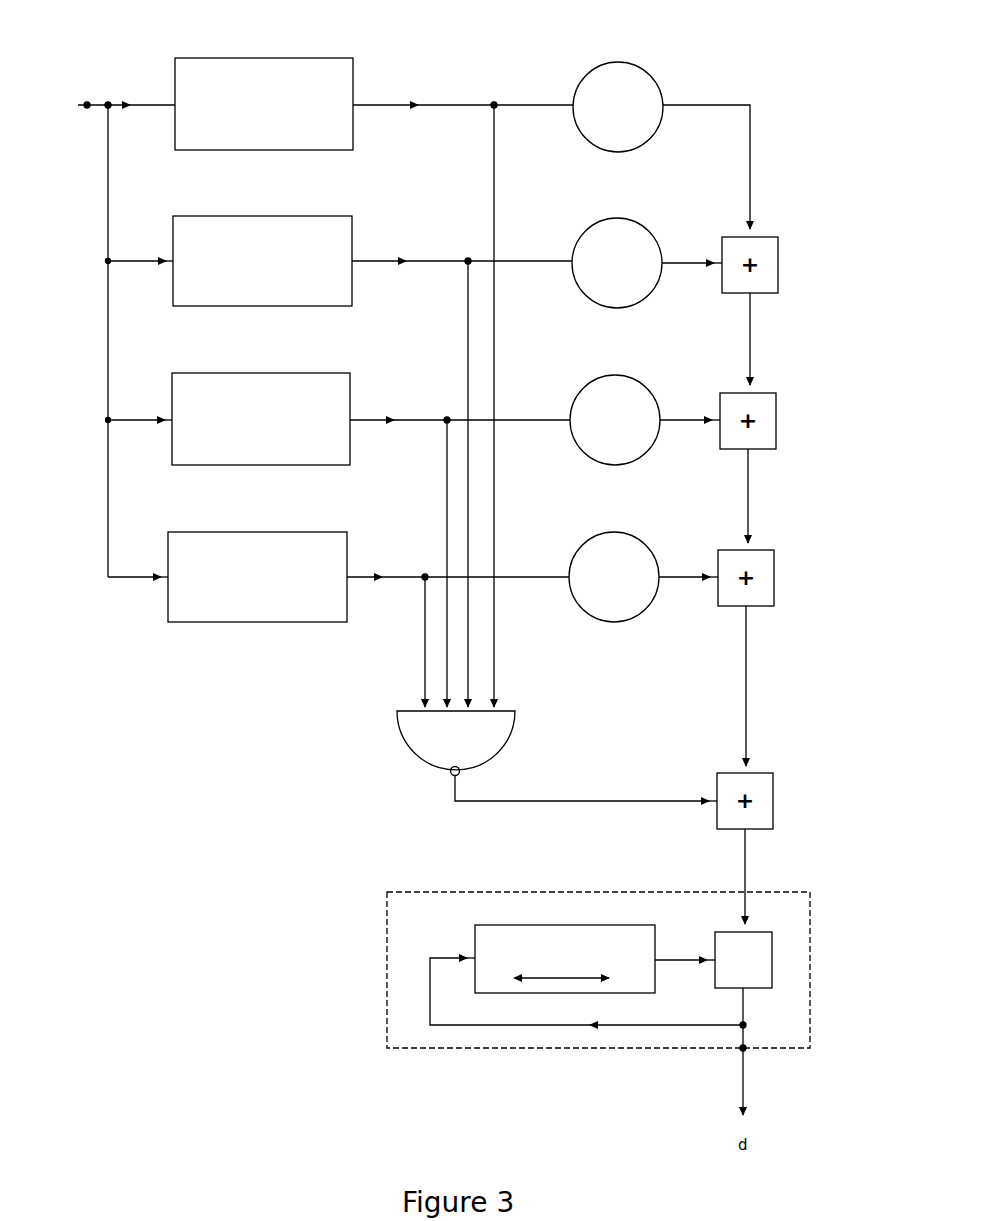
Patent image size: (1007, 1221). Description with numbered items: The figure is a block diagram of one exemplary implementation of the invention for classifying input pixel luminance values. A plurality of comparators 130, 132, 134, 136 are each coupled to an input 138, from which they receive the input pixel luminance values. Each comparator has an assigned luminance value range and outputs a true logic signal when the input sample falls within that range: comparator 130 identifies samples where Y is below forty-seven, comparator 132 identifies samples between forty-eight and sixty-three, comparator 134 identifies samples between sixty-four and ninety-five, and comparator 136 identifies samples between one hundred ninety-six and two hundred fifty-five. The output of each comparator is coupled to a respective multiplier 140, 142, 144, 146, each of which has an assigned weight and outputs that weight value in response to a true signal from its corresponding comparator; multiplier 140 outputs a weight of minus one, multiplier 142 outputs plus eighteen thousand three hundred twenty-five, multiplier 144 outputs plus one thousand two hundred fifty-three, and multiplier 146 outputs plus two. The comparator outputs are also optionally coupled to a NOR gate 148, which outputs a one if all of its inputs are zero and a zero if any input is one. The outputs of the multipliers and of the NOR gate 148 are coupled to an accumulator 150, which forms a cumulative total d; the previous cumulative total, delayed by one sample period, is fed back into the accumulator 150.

The comparator 130 is at (344, 56).
The comparator 132 is at (342, 214).
The comparator 134 is at (342, 372).
The comparator 136 is at (340, 531).
The input 138 is at (88, 95).
The multiplier 140 is at (648, 64).
The multiplier 142 is at (643, 222).
The multiplier 144 is at (641, 381).
The multiplier 146 is at (636, 535).
The NOR gate 148 is at (398, 733).
The accumulator 150 is at (378, 1027).